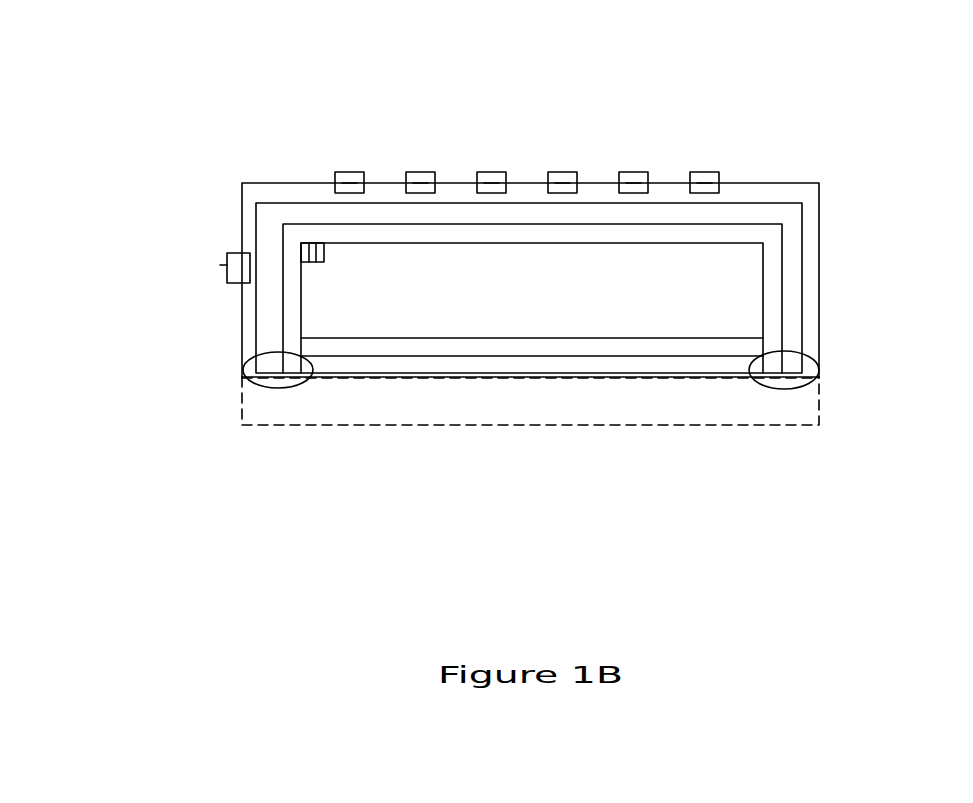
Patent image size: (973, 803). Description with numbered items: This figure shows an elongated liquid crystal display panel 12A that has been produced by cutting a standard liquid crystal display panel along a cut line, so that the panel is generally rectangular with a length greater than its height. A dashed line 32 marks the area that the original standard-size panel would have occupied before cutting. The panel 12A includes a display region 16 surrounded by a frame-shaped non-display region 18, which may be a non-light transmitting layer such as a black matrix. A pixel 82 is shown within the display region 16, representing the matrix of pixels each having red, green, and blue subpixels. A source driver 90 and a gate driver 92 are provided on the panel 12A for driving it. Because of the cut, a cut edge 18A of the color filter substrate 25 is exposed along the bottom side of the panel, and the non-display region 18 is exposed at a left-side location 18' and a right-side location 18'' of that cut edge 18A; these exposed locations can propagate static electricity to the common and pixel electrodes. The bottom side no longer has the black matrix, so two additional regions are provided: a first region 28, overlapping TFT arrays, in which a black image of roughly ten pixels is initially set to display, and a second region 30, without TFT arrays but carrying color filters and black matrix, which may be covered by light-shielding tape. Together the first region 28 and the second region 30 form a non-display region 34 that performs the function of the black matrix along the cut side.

The elongated liquid crystal display panel 12A is at (830, 92).
The color filter (CF) substrate 25 is at (786, 211).
The non-display region 18 is at (619, 286).
The display region 16 is at (715, 275).
The first region 28 is at (532, 348).
The second region 30 is at (532, 363).
The dashed line 32 is at (658, 427).
The source driver 90 is at (716, 170).
The pixel 82 is at (313, 232).
The gate driver 92 is at (228, 268).
The exposed location of non-display region 18' is at (214, 420).
The exposed location of non-display region 18'' is at (853, 422).
The cut edge 18A is at (360, 396).
The non-display region 34 is at (397, 396).